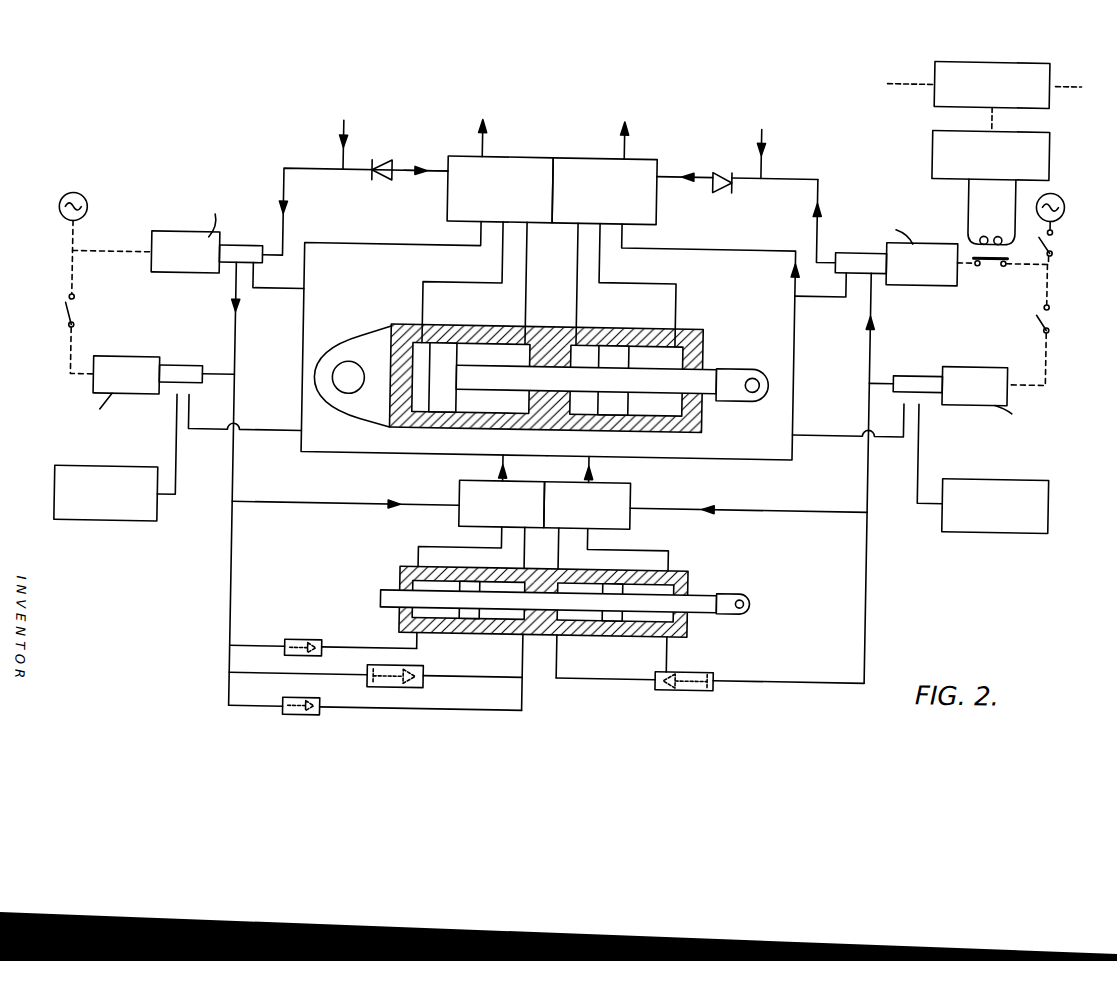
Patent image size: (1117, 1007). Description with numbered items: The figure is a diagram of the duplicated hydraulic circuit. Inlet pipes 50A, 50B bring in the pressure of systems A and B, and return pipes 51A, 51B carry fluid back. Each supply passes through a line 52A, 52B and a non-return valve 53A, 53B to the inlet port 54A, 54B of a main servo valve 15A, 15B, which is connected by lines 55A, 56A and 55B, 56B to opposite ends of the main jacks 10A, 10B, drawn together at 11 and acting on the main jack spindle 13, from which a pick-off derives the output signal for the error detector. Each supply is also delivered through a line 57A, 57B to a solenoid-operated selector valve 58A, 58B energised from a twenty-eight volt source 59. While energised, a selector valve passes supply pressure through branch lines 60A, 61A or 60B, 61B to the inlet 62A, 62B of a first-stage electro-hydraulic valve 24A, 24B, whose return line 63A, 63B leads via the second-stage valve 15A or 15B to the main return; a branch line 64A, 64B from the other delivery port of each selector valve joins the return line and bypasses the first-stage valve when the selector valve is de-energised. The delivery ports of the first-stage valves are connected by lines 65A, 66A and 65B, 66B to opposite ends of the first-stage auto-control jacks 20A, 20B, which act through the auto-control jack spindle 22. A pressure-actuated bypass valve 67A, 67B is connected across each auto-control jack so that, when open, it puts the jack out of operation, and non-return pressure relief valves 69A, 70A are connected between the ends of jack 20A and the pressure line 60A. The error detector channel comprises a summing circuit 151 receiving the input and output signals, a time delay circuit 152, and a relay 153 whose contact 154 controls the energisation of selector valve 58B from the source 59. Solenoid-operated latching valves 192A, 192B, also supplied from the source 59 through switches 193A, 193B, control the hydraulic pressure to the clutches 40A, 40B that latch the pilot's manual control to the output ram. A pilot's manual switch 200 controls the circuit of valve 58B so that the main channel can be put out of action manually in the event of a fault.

The main jack 10A is at (471, 357).
The main jack 10B is at (627, 358).
The main actuator cylinder 11 is at (535, 363).
The main jack spindle 13 is at (612, 366).
The main servo valve 15A is at (475, 189).
The main servo valve 15B is at (635, 192).
The first-stage auto-control jack 20A is at (543, 621).
The first-stage auto-control jack 20B is at (615, 628).
The auto-control jack spindle 22 is at (573, 620).
The first-stage electro-hydraulic valve 24A is at (470, 509).
The first-stage electro-hydraulic valve 24B is at (621, 513).
The clutch 40A is at (177, 476).
The clutch 40B is at (920, 487).
The inlet pipe 50A is at (317, 144).
The inlet pipe 50B is at (797, 154).
The return pipe 51A is at (510, 139).
The return pipe 51B is at (597, 140).
The line 52A is at (388, 189).
The line 52B is at (774, 201).
The non-return valve 53A is at (386, 156).
The non-return valve 53B is at (732, 156).
The inlet port 54A is at (431, 151).
The inlet port 54B is at (685, 158).
The line 55A is at (462, 282).
The line 55B is at (637, 285).
The line 56A is at (523, 270).
The line 56B is at (578, 270).
The line 57A is at (354, 213).
The line 57B is at (802, 221).
The solenoid-operated selector valve 58A is at (206, 251).
The solenoid-operated selector valve 58B is at (892, 263).
The 28 volt supply 59 is at (562, 207).
The branch line 60A is at (262, 484).
The branch line 60B is at (843, 477).
The branch line 61A is at (346, 515).
The branch line 61B is at (748, 521).
The inlet 62A is at (451, 476).
The inlet 62B is at (639, 479).
The return line 63A is at (425, 355).
The return line 63B is at (671, 358).
The branch line 64A is at (278, 293).
The branch line 64B is at (824, 305).
The line 65A is at (402, 587).
The line 65B is at (683, 601).
The line 66A is at (492, 618).
The line 66B is at (590, 603).
The pressure-actuated bypass valve 67A is at (376, 686).
The pressure-actuated bypass valve 67B is at (710, 693).
The non-return pressure relief valve 69A is at (322, 657).
The non-return pressure relief valve 70A is at (373, 700).
The summing circuit 151 is at (980, 90).
The time delay circuit 152 is at (957, 142).
The relay 153 is at (967, 211).
The relay contact 154 is at (1001, 293).
The solenoid-operated latching valve 192A is at (122, 401).
The solenoid-operated latching valve 192B is at (985, 410).
The switch 193A is at (108, 297).
The switch 193B is at (1021, 325).
The manual switch 200 is at (1029, 260).